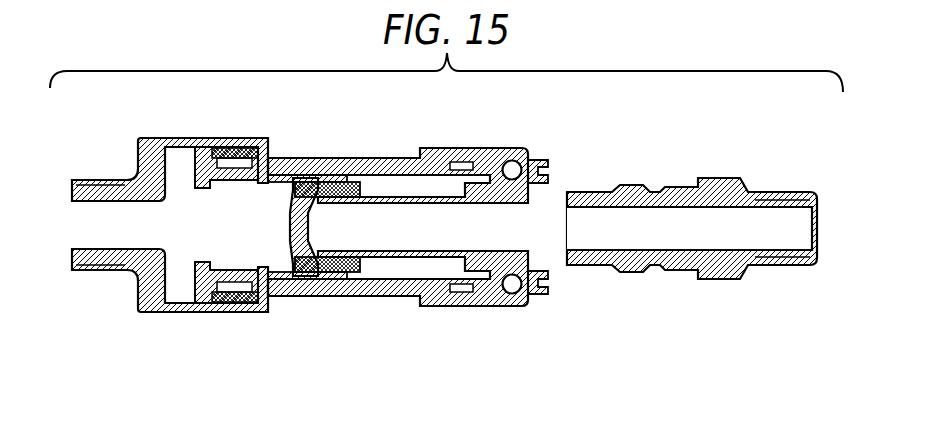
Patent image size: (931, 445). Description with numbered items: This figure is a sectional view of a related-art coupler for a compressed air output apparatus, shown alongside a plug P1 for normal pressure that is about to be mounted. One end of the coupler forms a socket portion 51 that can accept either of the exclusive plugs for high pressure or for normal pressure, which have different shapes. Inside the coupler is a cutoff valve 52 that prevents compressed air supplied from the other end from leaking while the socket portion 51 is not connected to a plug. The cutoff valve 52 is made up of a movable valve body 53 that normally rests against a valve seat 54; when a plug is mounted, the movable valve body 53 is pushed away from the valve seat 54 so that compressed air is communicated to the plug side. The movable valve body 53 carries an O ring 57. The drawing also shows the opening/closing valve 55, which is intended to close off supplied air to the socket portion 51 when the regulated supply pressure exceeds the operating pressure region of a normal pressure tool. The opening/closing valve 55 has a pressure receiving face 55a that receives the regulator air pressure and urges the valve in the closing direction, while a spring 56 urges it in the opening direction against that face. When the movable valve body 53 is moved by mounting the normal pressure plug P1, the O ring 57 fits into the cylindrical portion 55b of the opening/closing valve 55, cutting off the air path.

The socket portion 51 is at (416, 229).
The cutoff valve 52 is at (345, 157).
The movable valve body 53 is at (283, 243).
The valve seat 54 is at (300, 266).
The opening/closing valve 55 is at (195, 306).
The pressure receiving face 55a is at (137, 284).
The cylindrical portion 55b is at (202, 190).
The spring 56 is at (206, 140).
The O ring 57 is at (297, 158).
The plug for normal pressure P1 is at (716, 282).